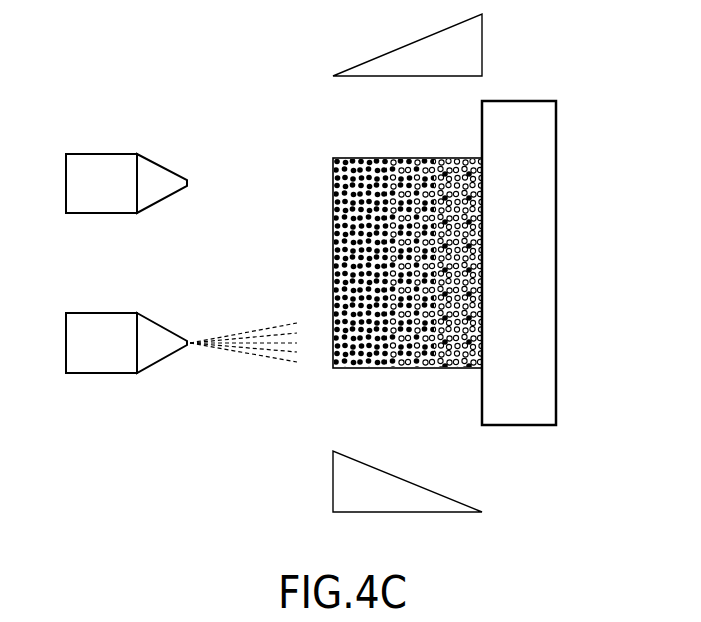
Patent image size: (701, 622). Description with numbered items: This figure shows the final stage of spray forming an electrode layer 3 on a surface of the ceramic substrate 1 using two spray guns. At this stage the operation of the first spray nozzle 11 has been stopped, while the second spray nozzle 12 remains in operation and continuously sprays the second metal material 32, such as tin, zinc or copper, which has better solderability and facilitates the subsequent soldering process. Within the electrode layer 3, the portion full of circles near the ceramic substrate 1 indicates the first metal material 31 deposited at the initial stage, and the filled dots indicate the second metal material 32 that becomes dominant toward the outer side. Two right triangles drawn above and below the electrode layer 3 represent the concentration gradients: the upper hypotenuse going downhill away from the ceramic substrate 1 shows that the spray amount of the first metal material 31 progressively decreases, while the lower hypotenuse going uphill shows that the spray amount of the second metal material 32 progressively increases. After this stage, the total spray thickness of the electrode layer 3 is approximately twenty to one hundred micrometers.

The ceramic substrate 1 is at (520, 415).
The electrode layer 3 is at (336, 267).
The first spray nozzle 11 is at (94, 160).
The second spray nozzle 12 is at (103, 365).
The first metal material 31 is at (463, 163).
The second metal material 32 is at (352, 160).